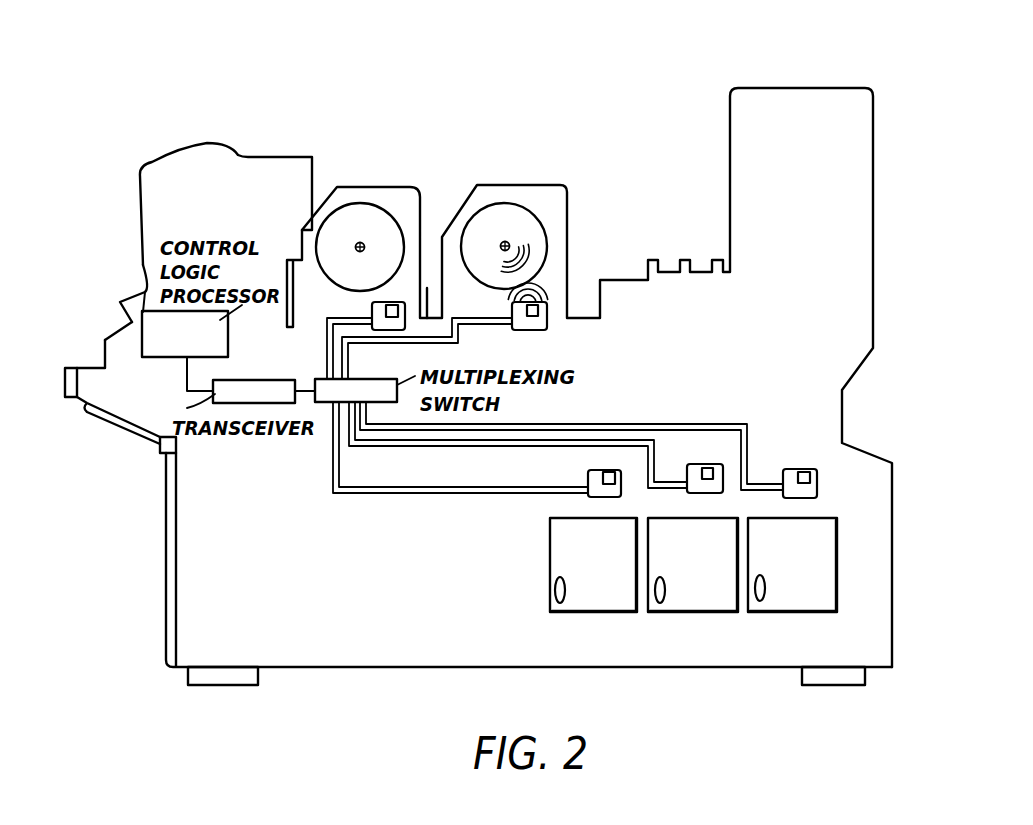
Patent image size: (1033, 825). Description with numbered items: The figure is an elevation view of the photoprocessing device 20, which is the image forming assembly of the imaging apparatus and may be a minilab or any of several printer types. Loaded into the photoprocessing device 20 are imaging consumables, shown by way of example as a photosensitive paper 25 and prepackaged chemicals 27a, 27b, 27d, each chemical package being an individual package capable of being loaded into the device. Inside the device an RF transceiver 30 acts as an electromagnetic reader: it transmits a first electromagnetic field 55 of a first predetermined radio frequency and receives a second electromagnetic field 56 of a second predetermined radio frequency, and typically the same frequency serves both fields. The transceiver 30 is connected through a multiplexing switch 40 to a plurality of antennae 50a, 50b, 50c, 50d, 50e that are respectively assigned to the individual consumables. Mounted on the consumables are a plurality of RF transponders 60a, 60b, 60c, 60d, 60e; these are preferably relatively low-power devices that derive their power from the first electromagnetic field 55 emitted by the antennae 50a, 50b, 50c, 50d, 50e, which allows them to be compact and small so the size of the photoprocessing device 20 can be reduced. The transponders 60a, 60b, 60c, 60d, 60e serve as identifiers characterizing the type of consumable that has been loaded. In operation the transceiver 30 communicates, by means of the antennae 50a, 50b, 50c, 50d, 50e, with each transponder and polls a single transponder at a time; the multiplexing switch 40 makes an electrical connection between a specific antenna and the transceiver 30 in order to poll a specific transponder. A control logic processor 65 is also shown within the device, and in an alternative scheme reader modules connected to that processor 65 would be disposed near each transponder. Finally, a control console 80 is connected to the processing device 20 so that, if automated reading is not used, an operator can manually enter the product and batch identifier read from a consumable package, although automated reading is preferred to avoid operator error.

The photoprocessing device 20 is at (822, 92).
The photosensitive paper 25 is at (357, 203).
The prepackaged chemicals 27a is at (577, 604).
The prepackaged chemicals 27b is at (680, 604).
The output tray 27d is at (795, 604).
The RF transceiver 30 is at (243, 379).
The multiplexing switch 40 is at (322, 378).
The antenna 50a is at (372, 302).
The antenna 50b is at (548, 328).
The antenna 50c is at (603, 488).
The antenna 50d is at (703, 466).
The antenna 50e is at (796, 468).
The first electromagnetic field 55 is at (540, 286).
The second electromagnetic field 56 is at (524, 243).
The RF transponder 60a is at (361, 245).
The RF transponder 60b is at (505, 242).
The RF transponder 60c is at (565, 582).
The RF transponder 60d is at (663, 582).
The RF transponder 60e is at (764, 580).
The control logic processor 65 is at (145, 292).
The control console 80 is at (108, 337).